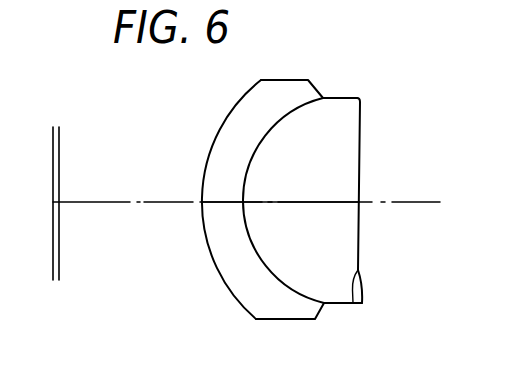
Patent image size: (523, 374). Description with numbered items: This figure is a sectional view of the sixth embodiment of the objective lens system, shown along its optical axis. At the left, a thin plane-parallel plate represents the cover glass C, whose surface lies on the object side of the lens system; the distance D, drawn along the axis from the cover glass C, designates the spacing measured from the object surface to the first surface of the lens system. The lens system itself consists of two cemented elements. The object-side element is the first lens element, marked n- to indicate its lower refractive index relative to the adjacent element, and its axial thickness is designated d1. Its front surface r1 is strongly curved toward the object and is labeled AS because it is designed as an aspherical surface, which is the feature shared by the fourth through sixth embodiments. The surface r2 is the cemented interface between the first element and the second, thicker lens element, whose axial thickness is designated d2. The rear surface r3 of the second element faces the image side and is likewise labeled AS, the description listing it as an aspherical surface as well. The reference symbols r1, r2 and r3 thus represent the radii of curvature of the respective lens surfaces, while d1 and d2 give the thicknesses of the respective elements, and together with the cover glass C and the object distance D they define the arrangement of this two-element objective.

The cover glass C is at (56, 189).
The distance from object surface to first lens surface D is at (130, 203).
The aspherical surface AS is at (306, 212).
The lens element of lower refractive index n- is at (278, 199).
The first lens surface r1 is at (234, 297).
The second lens surface r2 is at (290, 290).
The third lens surface r3 is at (353, 303).
The thickness of first lens element d1 is at (225, 198).
The thickness of second lens element d2 is at (302, 198).